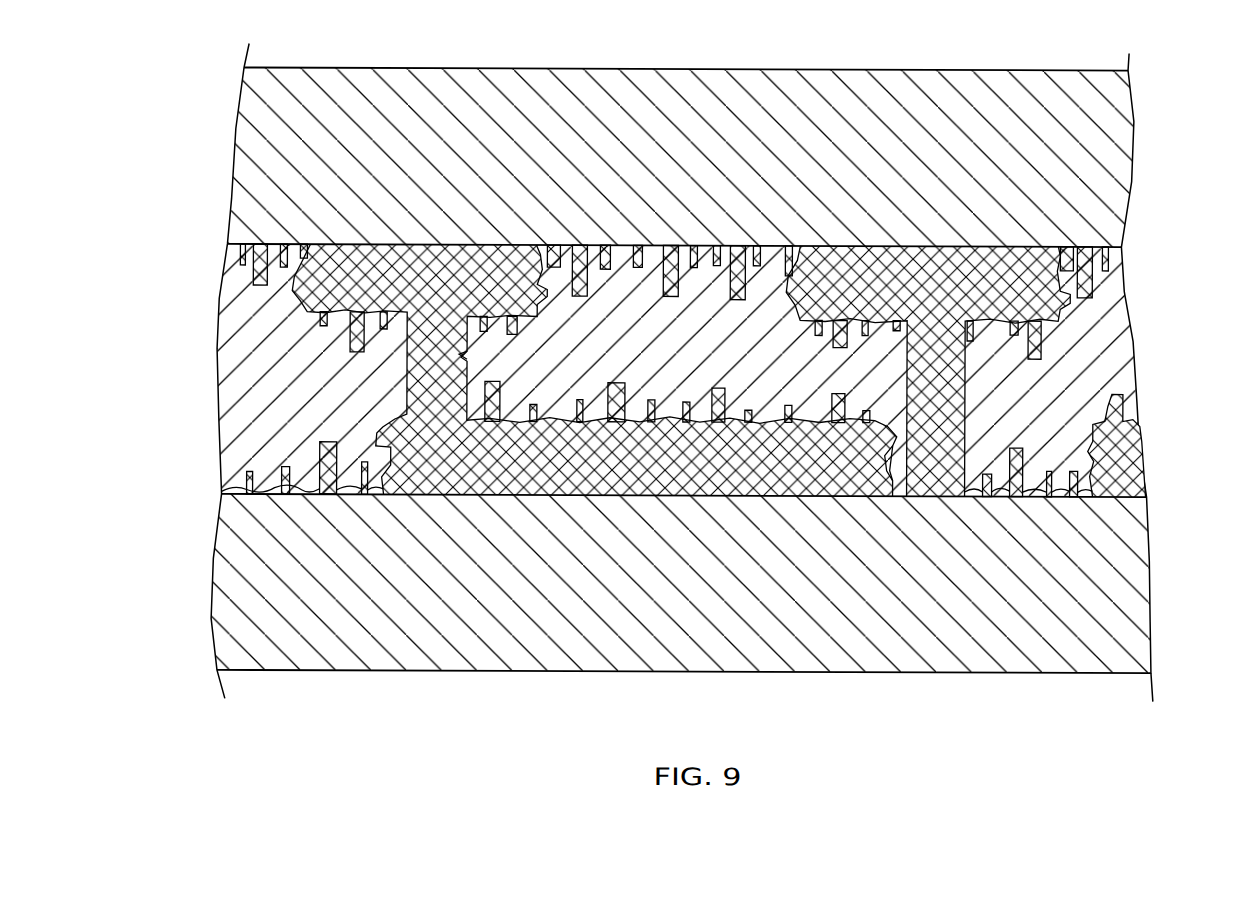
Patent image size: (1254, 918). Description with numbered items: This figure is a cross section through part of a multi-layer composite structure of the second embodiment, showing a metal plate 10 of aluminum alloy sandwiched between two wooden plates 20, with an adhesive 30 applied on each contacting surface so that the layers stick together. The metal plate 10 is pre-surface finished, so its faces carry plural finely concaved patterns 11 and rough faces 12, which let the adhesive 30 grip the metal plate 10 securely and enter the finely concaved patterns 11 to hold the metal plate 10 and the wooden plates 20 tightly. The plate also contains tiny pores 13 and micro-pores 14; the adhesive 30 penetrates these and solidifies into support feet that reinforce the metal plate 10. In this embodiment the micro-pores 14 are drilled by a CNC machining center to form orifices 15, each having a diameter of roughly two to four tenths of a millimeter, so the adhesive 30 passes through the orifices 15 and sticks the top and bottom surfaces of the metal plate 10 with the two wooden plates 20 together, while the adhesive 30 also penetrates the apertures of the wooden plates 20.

The metal plate 10 is at (232, 375).
The finely concaved pattern 11 is at (440, 290).
The rough face 12 is at (401, 320).
The tiny pore 13 is at (500, 400).
The micro-pore 14 is at (282, 267).
The orifice 15 is at (456, 358).
The wooden plate 20 is at (237, 150).
The adhesive 30 is at (878, 262).